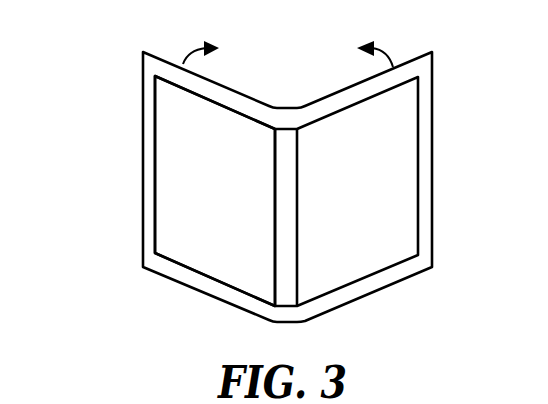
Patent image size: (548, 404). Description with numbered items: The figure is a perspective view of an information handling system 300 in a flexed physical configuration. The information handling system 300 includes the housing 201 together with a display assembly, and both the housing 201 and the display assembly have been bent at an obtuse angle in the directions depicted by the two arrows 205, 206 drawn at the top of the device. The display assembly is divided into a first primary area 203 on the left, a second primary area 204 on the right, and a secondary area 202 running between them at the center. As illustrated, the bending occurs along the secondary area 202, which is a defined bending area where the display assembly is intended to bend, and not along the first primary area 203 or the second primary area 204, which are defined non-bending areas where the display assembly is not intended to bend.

The information handling system 300 is at (73, 58).
The housing 201 is at (432, 173).
The secondary area 202 is at (288, 267).
The first primary area 203 is at (157, 192).
The second primary area 204 is at (418, 123).
The arrow 205 is at (198, 50).
The arrow 206 is at (379, 50).